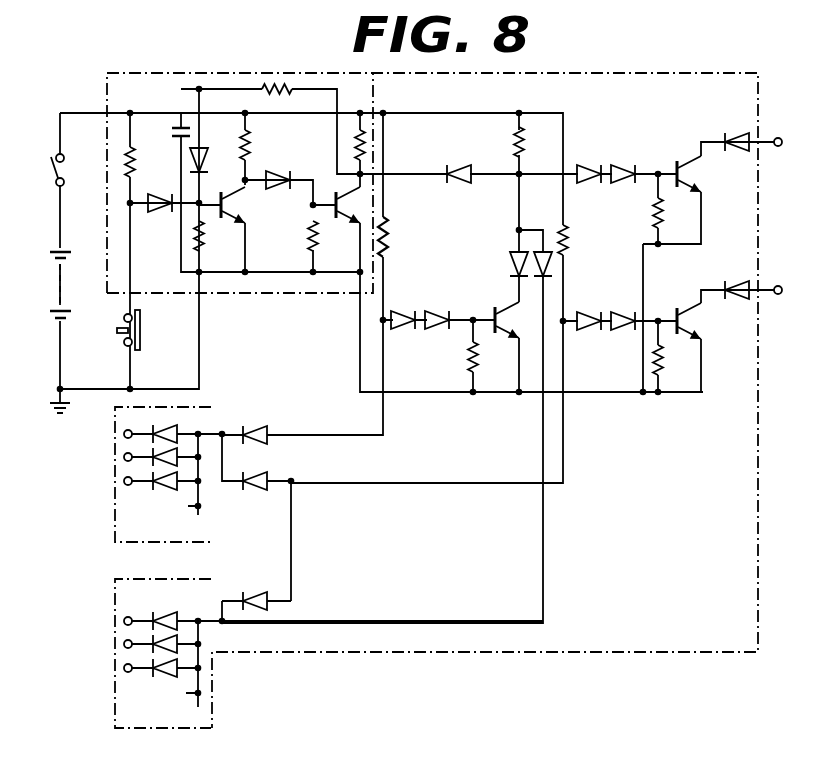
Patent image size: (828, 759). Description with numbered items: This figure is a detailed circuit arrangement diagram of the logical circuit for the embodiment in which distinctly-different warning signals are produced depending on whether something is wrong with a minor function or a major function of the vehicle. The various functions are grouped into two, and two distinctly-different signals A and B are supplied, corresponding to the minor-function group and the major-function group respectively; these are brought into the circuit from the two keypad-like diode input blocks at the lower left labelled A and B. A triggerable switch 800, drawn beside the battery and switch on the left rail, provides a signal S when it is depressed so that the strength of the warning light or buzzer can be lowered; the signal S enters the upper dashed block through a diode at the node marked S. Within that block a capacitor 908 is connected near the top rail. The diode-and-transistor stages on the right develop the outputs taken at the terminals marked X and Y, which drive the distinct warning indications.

The capacitor 908 is at (178, 128).
The triggerable switch 800 is at (125, 339).
The signal S is at (130, 203).
The signal A is at (224, 432).
The signal B is at (223, 623).
The output terminal X is at (778, 138).
The output terminal Y is at (778, 286).